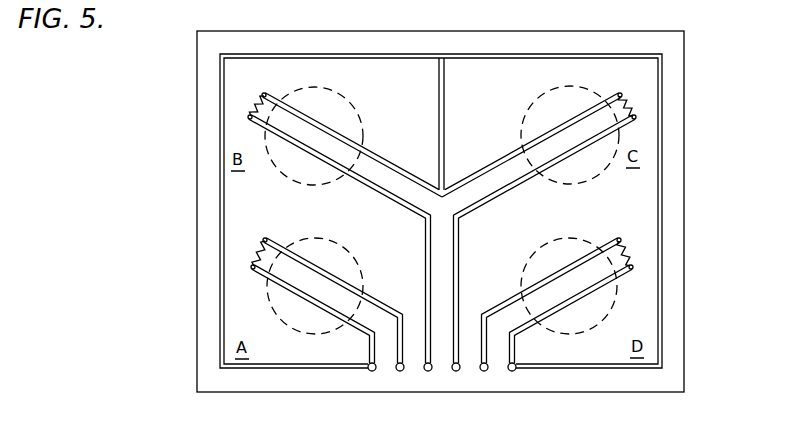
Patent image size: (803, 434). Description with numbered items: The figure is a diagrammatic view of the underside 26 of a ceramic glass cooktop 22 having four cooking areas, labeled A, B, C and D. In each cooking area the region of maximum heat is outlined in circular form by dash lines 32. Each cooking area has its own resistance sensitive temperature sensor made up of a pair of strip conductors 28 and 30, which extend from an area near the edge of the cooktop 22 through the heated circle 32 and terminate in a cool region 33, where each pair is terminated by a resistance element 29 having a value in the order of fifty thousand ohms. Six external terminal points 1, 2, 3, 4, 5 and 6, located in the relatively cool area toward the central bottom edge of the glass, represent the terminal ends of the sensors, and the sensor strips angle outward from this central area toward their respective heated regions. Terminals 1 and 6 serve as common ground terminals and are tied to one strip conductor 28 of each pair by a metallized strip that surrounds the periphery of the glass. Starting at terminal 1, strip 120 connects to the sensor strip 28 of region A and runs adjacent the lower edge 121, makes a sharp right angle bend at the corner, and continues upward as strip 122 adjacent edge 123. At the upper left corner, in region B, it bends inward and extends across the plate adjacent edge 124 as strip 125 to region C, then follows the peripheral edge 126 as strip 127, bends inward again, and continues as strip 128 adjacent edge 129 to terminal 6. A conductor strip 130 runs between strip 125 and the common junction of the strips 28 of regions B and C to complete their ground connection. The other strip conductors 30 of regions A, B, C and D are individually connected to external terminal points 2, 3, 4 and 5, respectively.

The ceramic glass cooktop 22 is at (690, 80).
The underside 26 is at (635, 190).
The strip conductor 28 is at (415, 174).
The resistance element 29 is at (258, 104).
The strip conductor 30 is at (384, 194).
The dash lines (region of maximum heat) 32 is at (342, 92).
The cool region 33 is at (237, 248).
The strip 120 is at (342, 369).
The lower edge 121 is at (242, 393).
The strip 122 is at (224, 193).
The edge 123 is at (197, 152).
The edge 124 is at (575, 30).
The strip 125 is at (333, 54).
The peripheral edge 126 is at (686, 332).
The strip 127 is at (663, 285).
The strip 128 is at (573, 369).
The edge 129 is at (628, 393).
The conductor strip 130 is at (438, 112).
The external terminal point 1 is at (372, 378).
The external terminal point 2 is at (400, 378).
The external terminal point 3 is at (428, 378).
The external terminal point 4 is at (456, 378).
The external terminal point 5 is at (484, 378).
The external terminal point 6 is at (512, 378).